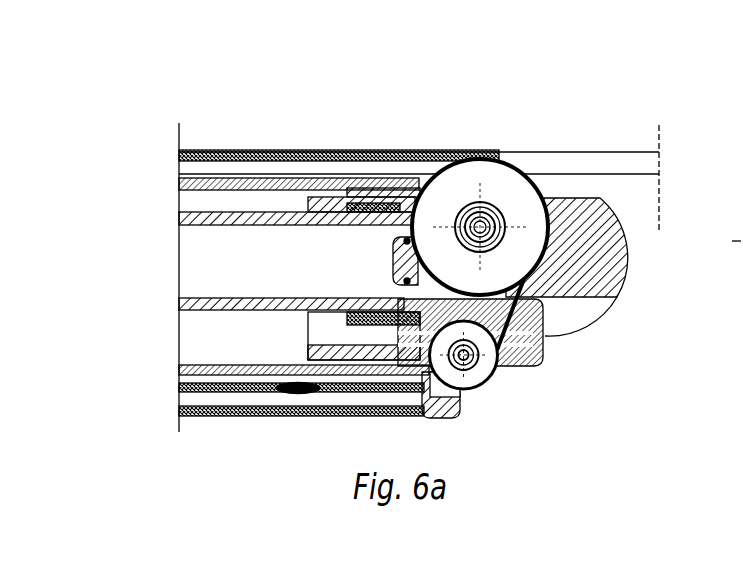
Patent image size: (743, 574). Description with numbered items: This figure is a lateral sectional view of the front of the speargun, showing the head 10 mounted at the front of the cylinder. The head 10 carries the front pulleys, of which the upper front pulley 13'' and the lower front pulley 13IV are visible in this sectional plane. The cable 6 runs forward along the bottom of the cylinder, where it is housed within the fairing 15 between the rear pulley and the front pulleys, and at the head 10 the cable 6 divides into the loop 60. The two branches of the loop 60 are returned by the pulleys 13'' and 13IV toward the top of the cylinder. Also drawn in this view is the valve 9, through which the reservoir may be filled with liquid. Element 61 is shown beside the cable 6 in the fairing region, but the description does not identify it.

The loop 60 is at (277, 150).
The upper front pulley 13'' is at (480, 186).
The head 10 is at (592, 197).
The valve 9 is at (543, 352).
The lower front pulley 13IV is at (478, 376).
The fairing 15 is at (203, 413).
The cable 6 is at (248, 393).
The bearing 61 is at (297, 397).